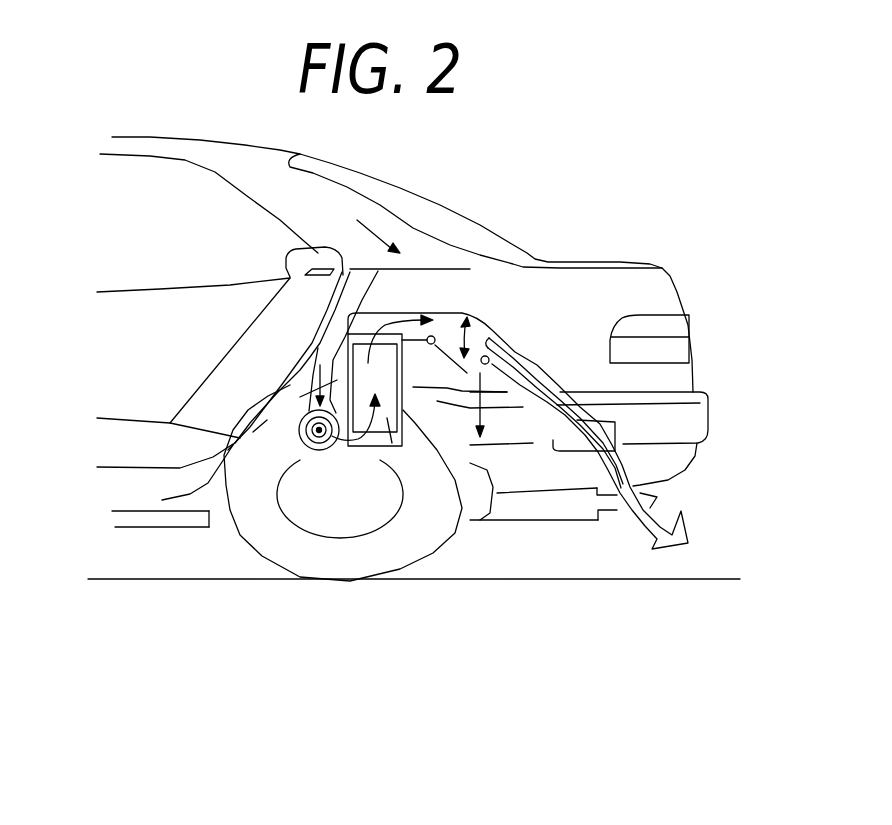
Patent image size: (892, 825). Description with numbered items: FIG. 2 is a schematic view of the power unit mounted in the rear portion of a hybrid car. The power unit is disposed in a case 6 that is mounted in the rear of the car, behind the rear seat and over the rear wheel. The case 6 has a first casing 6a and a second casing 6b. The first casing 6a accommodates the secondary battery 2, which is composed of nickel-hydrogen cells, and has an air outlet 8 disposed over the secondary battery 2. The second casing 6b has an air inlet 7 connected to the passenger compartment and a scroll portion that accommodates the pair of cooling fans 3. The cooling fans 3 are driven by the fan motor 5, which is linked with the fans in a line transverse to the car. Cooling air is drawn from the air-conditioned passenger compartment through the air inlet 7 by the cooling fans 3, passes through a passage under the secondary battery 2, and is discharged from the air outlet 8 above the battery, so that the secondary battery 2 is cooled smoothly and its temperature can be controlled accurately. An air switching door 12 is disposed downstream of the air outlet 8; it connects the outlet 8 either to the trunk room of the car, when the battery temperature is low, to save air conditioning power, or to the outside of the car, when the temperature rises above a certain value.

The secondary battery 2 is at (395, 539).
The cooling fans 3 is at (319, 539).
The fan motor 5 is at (327, 466).
The case 6 is at (358, 450).
The first casing 6a is at (468, 524).
The second casing 6b is at (315, 542).
The air inlet 7 is at (273, 554).
The air outlet 8 is at (443, 262).
The air switching door 12 is at (518, 350).